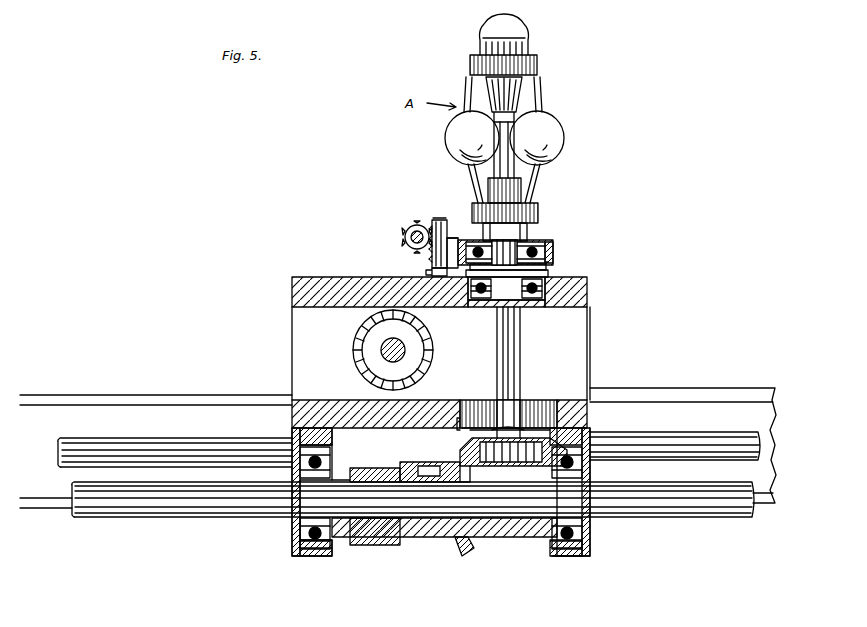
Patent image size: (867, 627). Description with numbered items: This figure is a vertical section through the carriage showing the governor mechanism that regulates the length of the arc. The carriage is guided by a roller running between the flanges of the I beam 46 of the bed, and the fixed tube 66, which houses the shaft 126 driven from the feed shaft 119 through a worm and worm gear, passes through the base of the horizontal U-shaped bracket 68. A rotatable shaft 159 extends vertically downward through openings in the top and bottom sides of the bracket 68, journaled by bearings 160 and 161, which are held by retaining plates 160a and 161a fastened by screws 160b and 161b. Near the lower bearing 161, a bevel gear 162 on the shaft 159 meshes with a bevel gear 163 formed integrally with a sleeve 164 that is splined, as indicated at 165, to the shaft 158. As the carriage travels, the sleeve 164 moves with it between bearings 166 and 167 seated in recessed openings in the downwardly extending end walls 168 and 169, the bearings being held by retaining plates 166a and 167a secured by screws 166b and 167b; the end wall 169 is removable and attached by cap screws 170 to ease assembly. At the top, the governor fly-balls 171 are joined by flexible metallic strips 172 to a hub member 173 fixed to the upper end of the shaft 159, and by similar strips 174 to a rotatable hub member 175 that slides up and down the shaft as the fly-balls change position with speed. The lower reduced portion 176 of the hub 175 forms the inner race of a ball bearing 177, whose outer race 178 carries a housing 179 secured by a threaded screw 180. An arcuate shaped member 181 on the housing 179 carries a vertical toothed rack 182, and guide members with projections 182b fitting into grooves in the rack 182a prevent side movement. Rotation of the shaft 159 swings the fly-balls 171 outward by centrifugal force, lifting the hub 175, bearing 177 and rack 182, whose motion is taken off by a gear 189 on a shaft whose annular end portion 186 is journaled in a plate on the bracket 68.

The I beam 46 is at (130, 395).
The tube 66 is at (352, 350).
The horizontal U-shaped bracket 68 is at (292, 294).
The feed shaft 119 is at (117, 438).
The shaft 126 is at (402, 348).
The shaft 158 is at (93, 520).
The rotatable shaft 159 is at (512, 176).
The bearing 160 is at (590, 278).
The retaining plate 160a is at (553, 266).
The screws 160b is at (638, 268).
The bearing 161 is at (538, 398).
The retaining plate 161a is at (462, 424).
The screws 161b is at (470, 434).
The bevel gear 162 is at (470, 448).
The bevel gear 163 is at (458, 540).
The sleeve 164 is at (416, 462).
The spline 165 is at (364, 468).
The bearing 166 is at (332, 540).
The retaining plate 166a is at (336, 548).
The screws 166b is at (330, 574).
The bearing 167 is at (552, 533).
The retaining plate 167a is at (552, 548).
The screws 167b is at (552, 556).
The end wall 168 is at (292, 421).
The end wall 169 is at (592, 447).
The cap screws 170 is at (580, 398).
The governor fly-balls 171 is at (556, 131).
The flexible metallic strips 172 is at (530, 88).
The hub member 173 is at (537, 64).
The flexible metallic strips 174 is at (522, 185).
The rotatable hub member 175 is at (540, 214).
The lower reduced portion 176 is at (528, 234).
The ball bearing 177 is at (458, 216).
The outer race 178 is at (553, 247).
The housing 179 is at (553, 259).
The threaded screw 180 is at (556, 251).
The arcuate shaped member 181 is at (465, 231).
The vertical toothed rack 182 is at (436, 232).
The toothed rack 182a is at (428, 273).
The projections 182b is at (443, 218).
The annular end portion 186 is at (410, 240).
The gear 189 is at (408, 228).